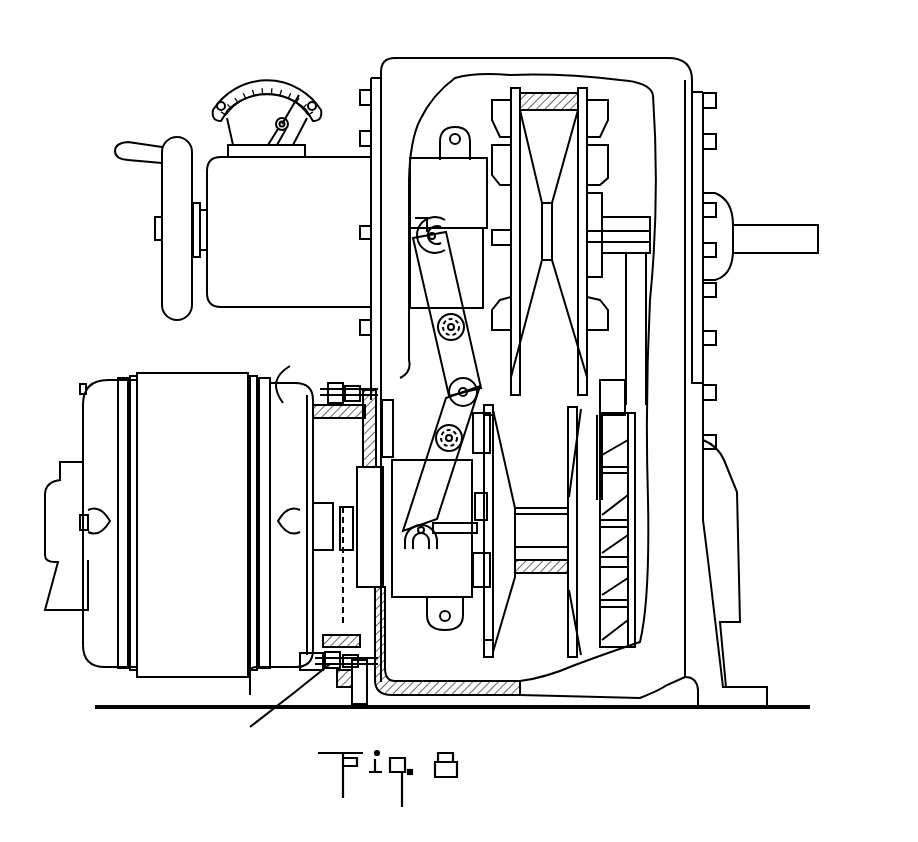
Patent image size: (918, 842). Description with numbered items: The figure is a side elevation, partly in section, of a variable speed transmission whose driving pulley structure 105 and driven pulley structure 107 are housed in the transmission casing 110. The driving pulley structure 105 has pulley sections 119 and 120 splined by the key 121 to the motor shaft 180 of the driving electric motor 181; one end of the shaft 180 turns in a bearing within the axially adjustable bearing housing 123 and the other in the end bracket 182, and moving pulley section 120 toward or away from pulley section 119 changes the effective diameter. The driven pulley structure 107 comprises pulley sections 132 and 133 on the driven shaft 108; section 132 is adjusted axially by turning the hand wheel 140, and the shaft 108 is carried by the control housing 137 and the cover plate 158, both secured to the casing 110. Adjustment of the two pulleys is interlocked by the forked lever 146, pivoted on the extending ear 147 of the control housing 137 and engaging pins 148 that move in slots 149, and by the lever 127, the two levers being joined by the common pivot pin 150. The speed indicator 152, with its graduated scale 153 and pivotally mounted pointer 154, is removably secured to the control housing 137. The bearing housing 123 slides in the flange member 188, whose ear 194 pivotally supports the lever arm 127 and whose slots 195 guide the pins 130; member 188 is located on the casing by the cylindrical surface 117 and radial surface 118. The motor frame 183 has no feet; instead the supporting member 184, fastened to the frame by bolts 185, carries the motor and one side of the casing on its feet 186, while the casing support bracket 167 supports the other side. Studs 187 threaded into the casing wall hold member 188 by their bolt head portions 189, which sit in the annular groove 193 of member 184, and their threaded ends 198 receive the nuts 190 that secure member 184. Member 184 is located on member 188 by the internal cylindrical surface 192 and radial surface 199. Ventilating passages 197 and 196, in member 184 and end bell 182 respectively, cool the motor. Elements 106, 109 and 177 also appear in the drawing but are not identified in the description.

The driving pulley structure 105 is at (542, 641).
The pulley hub bracket 106 is at (564, 403).
The driven pulley structure 107 is at (558, 130).
The driven shaft 108 is at (634, 222).
The output shaft 109 is at (796, 228).
The transmission casing 110 is at (640, 58).
The cylindrical surface 117 is at (374, 693).
The radial surface 118 is at (390, 658).
The pulley section 119 is at (570, 606).
The pulley section 120 is at (497, 604).
The key 121 is at (554, 492).
The axially adjustable bearing housing 123 is at (360, 486).
The forked lever 127 is at (446, 415).
The pins 130 is at (417, 538).
The pulley section 132 is at (587, 116).
The pulley section 133 is at (496, 110).
The control housing 137 is at (258, 301).
The hand wheel 140 is at (178, 268).
The forked lever 146 is at (453, 360).
The extending ear 147 is at (478, 326).
The pins 148 is at (436, 223).
The slots 149 is at (463, 231).
The common pivot pin 150 is at (478, 392).
The speed indicator 152 is at (233, 127).
The graduated scale 153 is at (253, 82).
The pointer 154 is at (287, 92).
The cover plate 158 is at (700, 168).
The casing support bracket 167 is at (712, 575).
The plate bolt 177 is at (718, 398).
The motor shaft 180 is at (372, 484).
The driving electric motor 181 is at (190, 528).
The end bracket 182 is at (103, 420).
The motor frame 183 is at (200, 362).
The supporting member 184 is at (288, 400).
The bolts 185 is at (325, 414).
The feet 186 is at (326, 668).
The studs 187 is at (419, 405).
The flange member 188 is at (384, 623).
The bolt head portion 189 is at (331, 384).
The nuts 190 is at (336, 385).
The internal cylindrical surface 192 is at (343, 634).
The annular groove 193 is at (327, 428).
The ear 194 is at (462, 452).
The slots 195 is at (458, 533).
The ventilating passage 196 is at (65, 613).
The ventilating passage 197 is at (322, 627).
The threaded ends 198 is at (279, 709).
The radial surface 199 is at (392, 650).